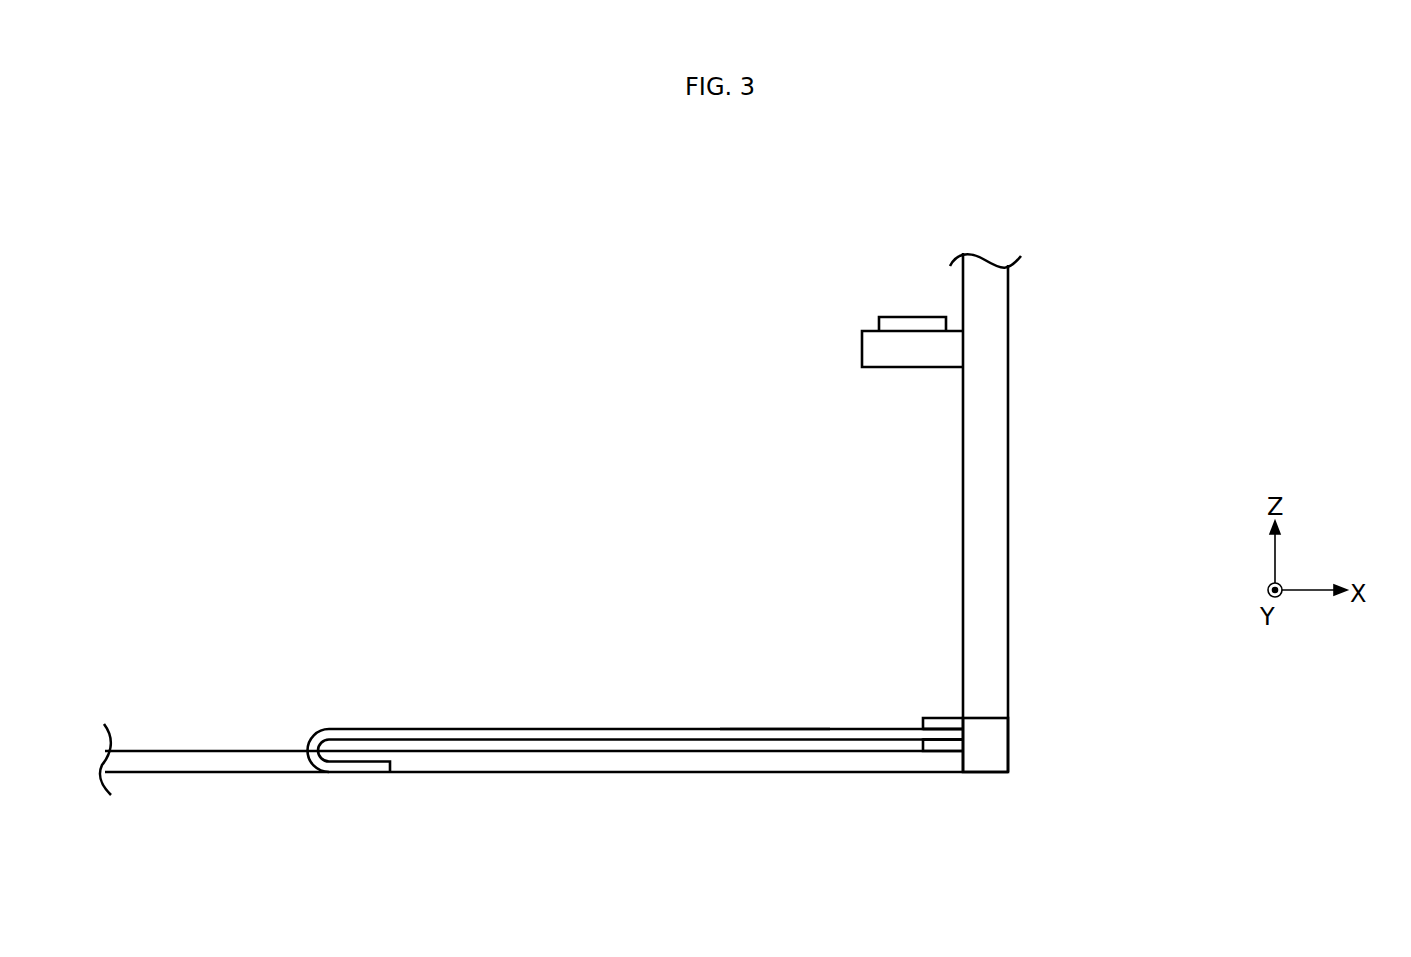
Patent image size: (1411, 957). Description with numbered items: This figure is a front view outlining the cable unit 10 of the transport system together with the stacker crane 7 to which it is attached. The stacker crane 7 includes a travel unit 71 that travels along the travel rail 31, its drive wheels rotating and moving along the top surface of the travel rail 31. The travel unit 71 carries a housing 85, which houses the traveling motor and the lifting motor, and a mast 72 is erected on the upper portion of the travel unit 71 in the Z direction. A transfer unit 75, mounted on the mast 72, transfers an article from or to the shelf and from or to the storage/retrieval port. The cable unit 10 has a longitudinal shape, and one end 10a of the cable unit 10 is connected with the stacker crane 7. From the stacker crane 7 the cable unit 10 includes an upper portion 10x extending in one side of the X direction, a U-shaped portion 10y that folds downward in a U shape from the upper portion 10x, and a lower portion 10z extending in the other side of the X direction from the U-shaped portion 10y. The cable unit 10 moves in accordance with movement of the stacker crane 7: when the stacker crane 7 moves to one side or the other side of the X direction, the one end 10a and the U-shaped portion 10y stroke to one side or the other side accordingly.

The stacker crane 7 is at (937, 459).
The cable unit 10 is at (588, 740).
The one end 10a is at (950, 735).
The upper portion 10x is at (774, 735).
The U-shaped portion 10y is at (306, 746).
The lower portion 10z is at (355, 767).
The travel rail 31 is at (583, 762).
The travel unit 71 is at (983, 717).
The mast 72 is at (992, 484).
The transfer unit 75 is at (849, 334).
The housing 85 is at (993, 743).